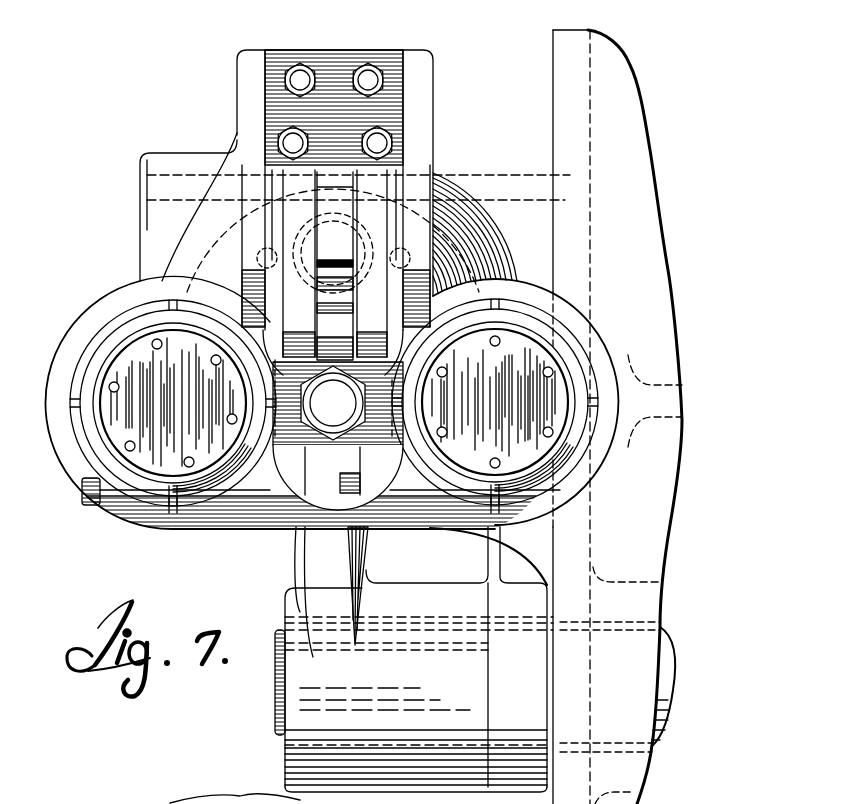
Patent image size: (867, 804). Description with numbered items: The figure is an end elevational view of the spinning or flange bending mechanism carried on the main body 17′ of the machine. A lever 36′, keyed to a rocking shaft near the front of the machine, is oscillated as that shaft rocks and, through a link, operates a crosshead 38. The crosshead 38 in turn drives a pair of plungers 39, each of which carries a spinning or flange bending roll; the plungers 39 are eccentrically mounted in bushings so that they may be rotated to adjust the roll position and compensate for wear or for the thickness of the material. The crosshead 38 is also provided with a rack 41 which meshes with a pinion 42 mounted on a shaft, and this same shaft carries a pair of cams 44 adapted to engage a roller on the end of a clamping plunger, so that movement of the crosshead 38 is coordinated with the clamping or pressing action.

The main body 17′ is at (628, 515).
The lever 36′ is at (323, 545).
The crosshead 38 is at (232, 300).
The plungers 39 is at (150, 360).
The rack 41 is at (432, 297).
The pinion 42 is at (352, 278).
The cams 44 is at (370, 190).